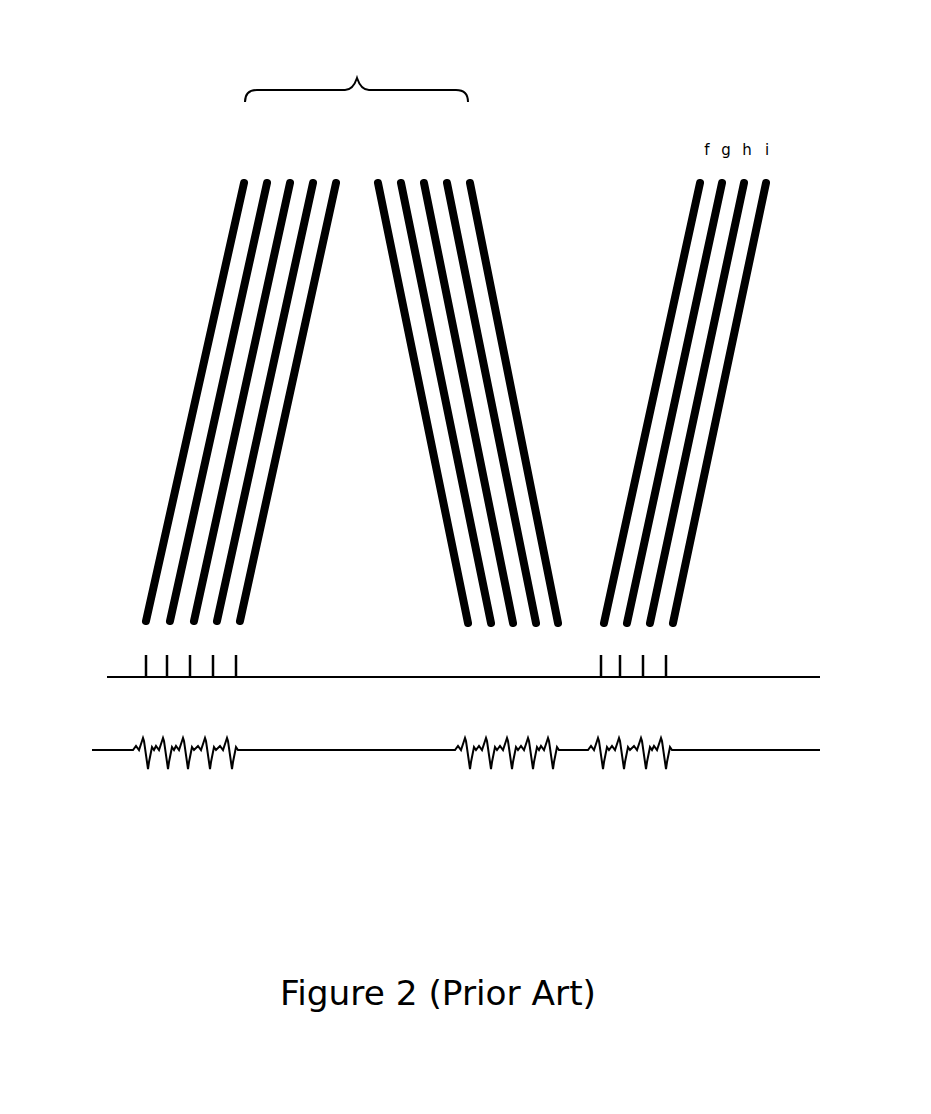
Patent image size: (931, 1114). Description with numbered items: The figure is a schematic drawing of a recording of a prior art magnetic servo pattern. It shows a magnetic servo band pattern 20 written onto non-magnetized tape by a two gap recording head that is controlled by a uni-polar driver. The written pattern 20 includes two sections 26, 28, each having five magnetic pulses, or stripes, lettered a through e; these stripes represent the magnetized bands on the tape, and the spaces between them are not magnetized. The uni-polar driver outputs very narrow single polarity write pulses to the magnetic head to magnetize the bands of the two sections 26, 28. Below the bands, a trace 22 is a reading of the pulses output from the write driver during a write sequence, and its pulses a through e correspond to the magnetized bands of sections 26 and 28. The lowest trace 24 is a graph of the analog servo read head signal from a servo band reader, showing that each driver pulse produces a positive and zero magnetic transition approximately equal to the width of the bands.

The magnetic servo band pattern 20 is at (356, 62).
The reading of the pulses output from the write driver 22 is at (105, 672).
The graph of the analog servo read head signal 24 is at (93, 772).
The first section of magnetized bands 26 is at (206, 295).
The second section of magnetized bands 28 is at (505, 272).